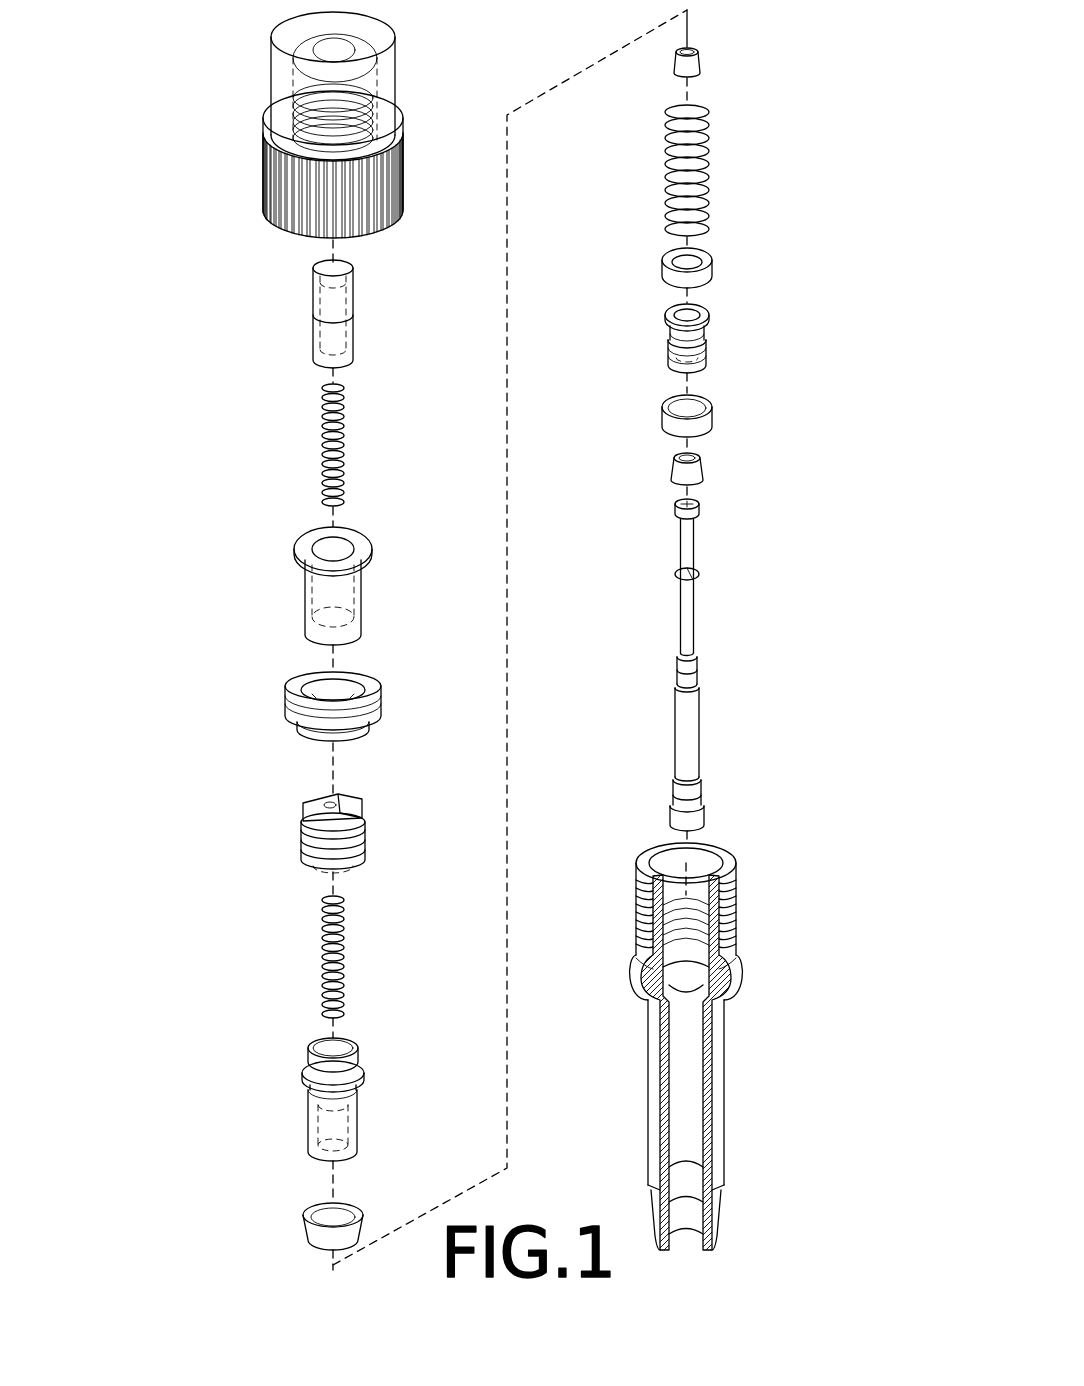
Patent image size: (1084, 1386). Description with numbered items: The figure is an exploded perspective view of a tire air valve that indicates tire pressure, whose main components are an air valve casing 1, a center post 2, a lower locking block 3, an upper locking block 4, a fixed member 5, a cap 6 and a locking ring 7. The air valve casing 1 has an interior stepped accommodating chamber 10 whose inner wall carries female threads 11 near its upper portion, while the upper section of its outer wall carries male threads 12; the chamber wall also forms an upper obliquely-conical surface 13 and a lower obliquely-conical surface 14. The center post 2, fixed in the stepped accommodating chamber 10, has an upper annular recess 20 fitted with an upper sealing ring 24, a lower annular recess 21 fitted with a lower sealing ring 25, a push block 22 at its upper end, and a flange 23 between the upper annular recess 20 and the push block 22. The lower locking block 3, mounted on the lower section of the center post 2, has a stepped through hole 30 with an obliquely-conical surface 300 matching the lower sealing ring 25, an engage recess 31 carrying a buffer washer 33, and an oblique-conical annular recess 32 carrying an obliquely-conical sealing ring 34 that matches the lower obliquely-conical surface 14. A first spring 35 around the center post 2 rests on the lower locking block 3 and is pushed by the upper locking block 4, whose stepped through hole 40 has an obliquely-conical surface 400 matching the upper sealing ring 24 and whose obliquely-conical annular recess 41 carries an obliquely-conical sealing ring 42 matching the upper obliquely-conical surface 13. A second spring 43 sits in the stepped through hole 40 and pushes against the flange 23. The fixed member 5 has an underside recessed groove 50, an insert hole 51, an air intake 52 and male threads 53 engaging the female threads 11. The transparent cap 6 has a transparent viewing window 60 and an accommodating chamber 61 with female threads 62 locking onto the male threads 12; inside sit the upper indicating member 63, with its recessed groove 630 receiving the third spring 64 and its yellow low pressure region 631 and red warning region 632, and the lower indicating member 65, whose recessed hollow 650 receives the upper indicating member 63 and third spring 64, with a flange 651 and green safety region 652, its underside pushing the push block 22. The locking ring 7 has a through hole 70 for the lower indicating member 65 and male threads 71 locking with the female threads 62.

The air valve casing 1 is at (693, 1046).
The stepped accommodating chamber 10 is at (680, 1065).
The female threads 11 is at (640, 980).
The male threads 12 is at (734, 908).
The upper obliquely-conical surface 13 is at (687, 987).
The lower obliquely-conical surface 14 is at (687, 1172).
The center post 2 is at (733, 664).
The upper annular recess 20 is at (693, 677).
The lower annular recess 21 is at (695, 800).
The push block 22 is at (699, 510).
The flange 23 is at (699, 575).
The upper sealing ring 24 is at (700, 62).
The lower sealing ring 25 is at (705, 470).
The lower locking block 3 is at (689, 340).
The stepped through hole 30 is at (695, 313).
The engage recess 31 is at (672, 328).
The oblique-conical annular recess 32 is at (708, 348).
The obliquely-conical surface 300 is at (670, 358).
The buffer washer 33 is at (712, 270).
The obliquely-conical sealing ring 34 is at (712, 420).
The first spring 35 is at (707, 178).
The upper locking block 4 is at (359, 1082).
The stepped through hole 40 is at (343, 1050).
The obliquely-conical annular recess 41 is at (317, 1093).
The obliquely-conical surface 400 is at (343, 1135).
The obliquely-conical sealing ring 42 is at (360, 1230).
The second spring 43 is at (340, 965).
The fixed member 5 is at (343, 834).
The recessed groove 50 is at (325, 866).
The insert hole 51 is at (340, 800).
The air intake 52 is at (337, 832).
The male threads 53 is at (363, 840).
The cap 6 is at (336, 125).
The transparent viewing window 60 is at (395, 78).
The accommodating chamber 61 is at (298, 88).
The female threads 62 is at (353, 122).
The upper indicating member 63 is at (337, 308).
The recessed groove 630 is at (327, 328).
The low pressure region 631 is at (353, 293).
The warning region 632 is at (353, 338).
The third spring 64 is at (340, 452).
The lower indicating member 65 is at (342, 573).
The recessed hollow 650 is at (343, 545).
The flange 651 is at (368, 565).
The safety region 652 is at (363, 600).
The locking ring 7 is at (340, 691).
The through hole 70 is at (322, 702).
The male threads 71 is at (375, 722).